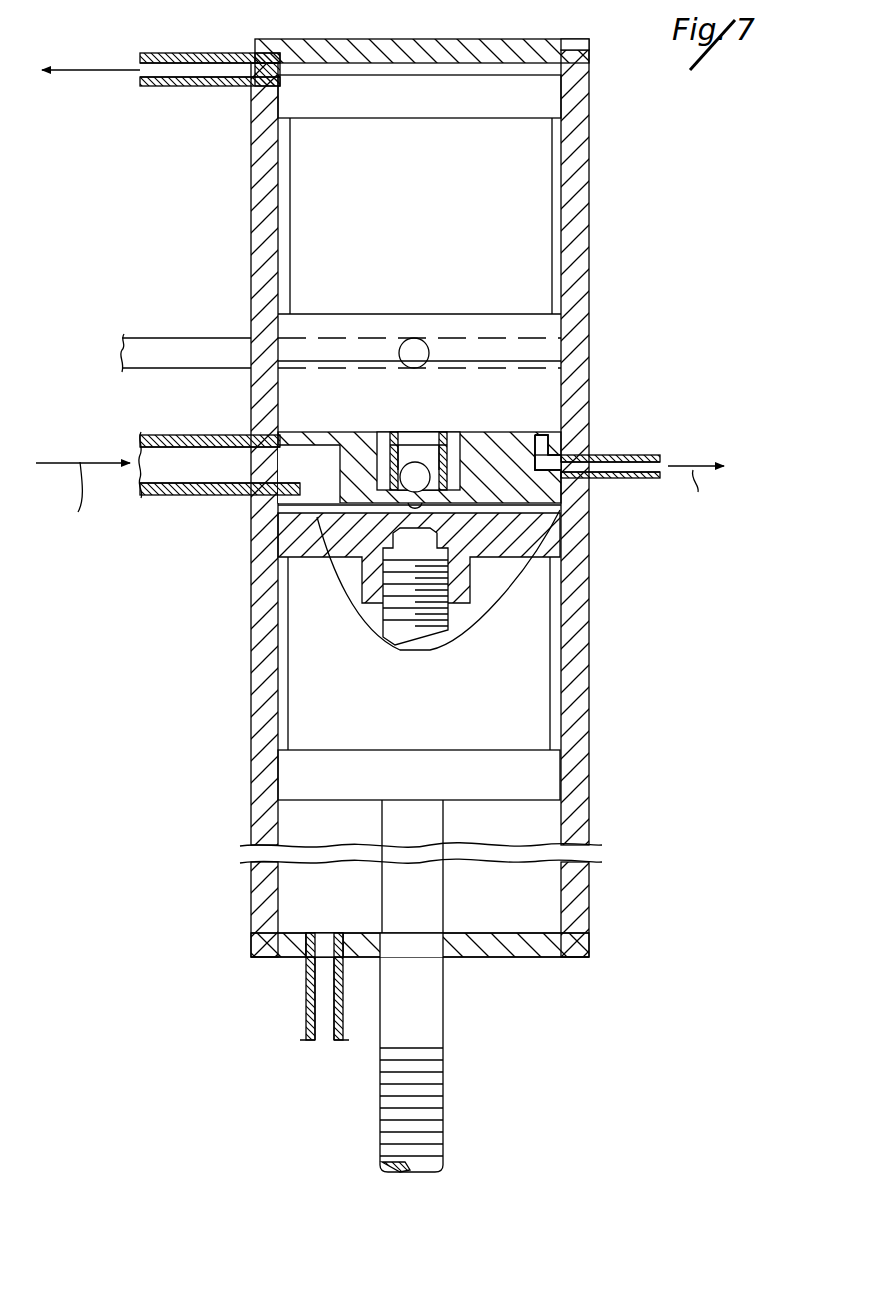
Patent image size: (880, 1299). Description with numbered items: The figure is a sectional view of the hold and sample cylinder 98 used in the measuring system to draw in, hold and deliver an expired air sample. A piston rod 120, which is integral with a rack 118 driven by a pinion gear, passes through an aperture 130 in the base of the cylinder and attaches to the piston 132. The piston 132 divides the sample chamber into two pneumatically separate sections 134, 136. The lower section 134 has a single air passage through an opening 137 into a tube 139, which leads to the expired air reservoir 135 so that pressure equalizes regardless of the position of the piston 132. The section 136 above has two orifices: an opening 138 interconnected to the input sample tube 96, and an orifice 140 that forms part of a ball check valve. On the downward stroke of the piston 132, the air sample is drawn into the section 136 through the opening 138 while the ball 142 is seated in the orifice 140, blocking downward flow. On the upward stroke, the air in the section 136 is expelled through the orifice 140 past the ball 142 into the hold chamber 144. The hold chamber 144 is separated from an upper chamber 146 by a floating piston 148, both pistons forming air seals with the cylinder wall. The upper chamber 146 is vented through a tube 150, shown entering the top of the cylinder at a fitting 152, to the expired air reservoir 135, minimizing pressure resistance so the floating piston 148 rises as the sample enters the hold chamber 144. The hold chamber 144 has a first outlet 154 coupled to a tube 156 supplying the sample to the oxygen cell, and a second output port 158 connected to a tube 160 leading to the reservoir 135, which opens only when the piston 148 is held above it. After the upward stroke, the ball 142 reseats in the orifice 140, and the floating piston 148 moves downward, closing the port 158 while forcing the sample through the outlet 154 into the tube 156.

The input sample tube 96 is at (215, 434).
The hold and sample cylinder 98 is at (205, 747).
The rack 118 is at (431, 1103).
The piston rod 120 is at (430, 1021).
The aperture 130 is at (447, 958).
The piston 132 is at (525, 636).
The section 134 is at (535, 821).
The expired air reservoir 135 is at (294, 1097).
The section 136 is at (545, 509).
The opening 137 is at (330, 935).
The opening 138 is at (278, 513).
The tube 139 is at (306, 985).
The orifice 140 is at (405, 510).
The ball 142 is at (413, 474).
The hold chamber 144 is at (540, 396).
The upper chamber 146 is at (545, 68).
The floating piston 148 is at (525, 191).
The tube 150 is at (236, 62).
The conduit fitting 152 is at (290, 66).
The first outlet 154 is at (545, 432).
The tube 156 is at (626, 455).
The second output port 158 is at (425, 366).
The tube 160 is at (216, 354).